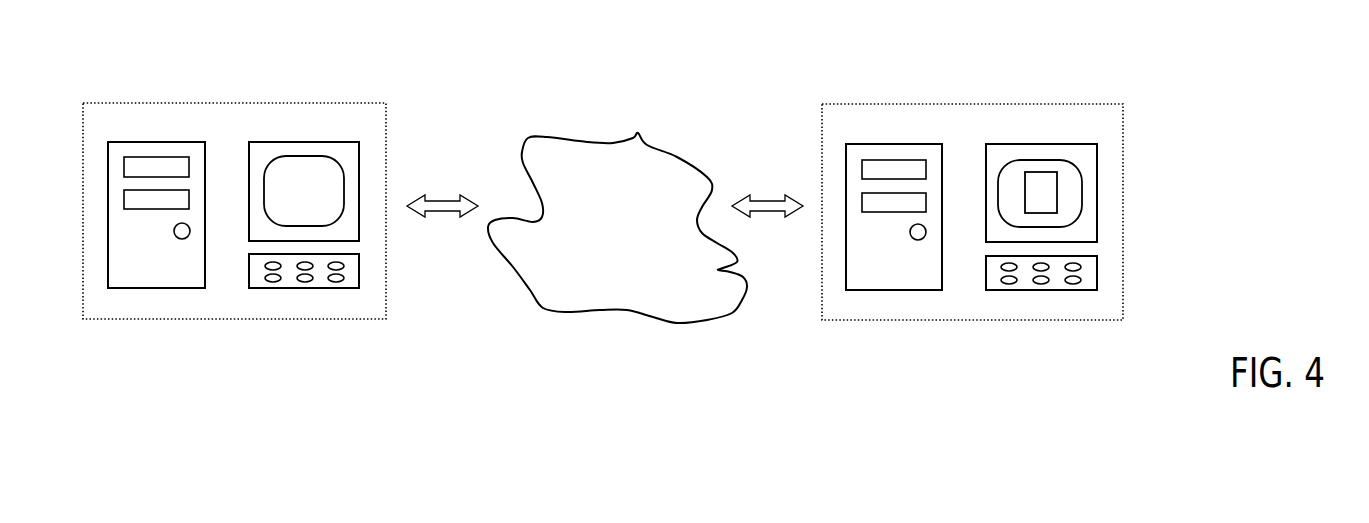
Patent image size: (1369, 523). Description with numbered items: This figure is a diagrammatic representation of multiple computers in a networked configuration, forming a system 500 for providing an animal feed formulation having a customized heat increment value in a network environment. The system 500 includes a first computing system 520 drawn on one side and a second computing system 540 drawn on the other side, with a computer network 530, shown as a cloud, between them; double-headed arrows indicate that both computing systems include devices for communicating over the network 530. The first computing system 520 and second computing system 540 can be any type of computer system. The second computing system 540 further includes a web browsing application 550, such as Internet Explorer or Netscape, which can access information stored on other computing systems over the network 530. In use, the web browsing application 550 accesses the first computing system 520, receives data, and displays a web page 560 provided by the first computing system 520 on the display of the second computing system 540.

The system 500 is at (735, 122).
The first computing system 520 is at (232, 103).
The computer network 530 is at (648, 318).
The second computing system 540 is at (973, 103).
The web browsing application 550 is at (1077, 163).
The web page 560 is at (1037, 172).